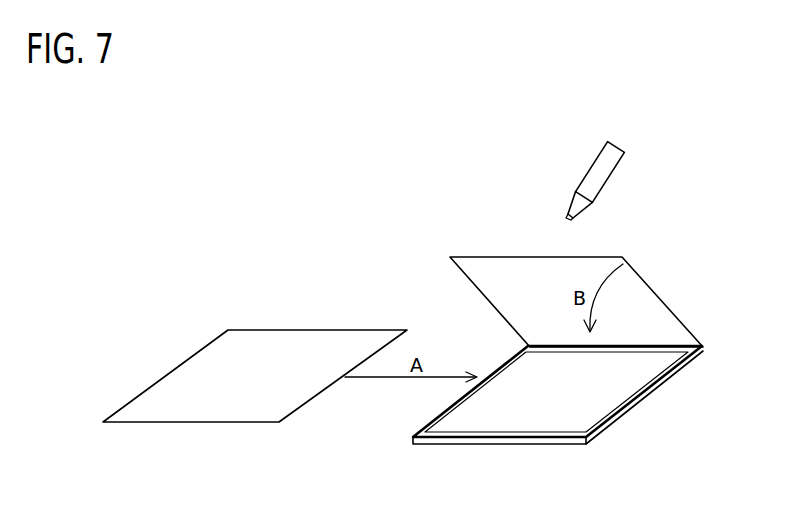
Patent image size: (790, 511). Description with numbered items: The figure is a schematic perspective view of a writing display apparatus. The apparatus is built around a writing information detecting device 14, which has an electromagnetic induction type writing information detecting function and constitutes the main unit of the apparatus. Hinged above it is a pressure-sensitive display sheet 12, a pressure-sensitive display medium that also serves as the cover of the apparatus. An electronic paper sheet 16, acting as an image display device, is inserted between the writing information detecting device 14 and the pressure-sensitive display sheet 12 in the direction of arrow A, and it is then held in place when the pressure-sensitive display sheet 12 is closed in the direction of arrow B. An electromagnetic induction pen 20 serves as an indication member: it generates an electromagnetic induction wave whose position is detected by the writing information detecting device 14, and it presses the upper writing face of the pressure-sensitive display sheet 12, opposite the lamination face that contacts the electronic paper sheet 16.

The pressure-sensitive display sheet 12 is at (657, 295).
The writing information detecting device 14 is at (638, 402).
The electronic paper sheet 16 is at (255, 335).
The electromagnetic induction pen 20 is at (600, 183).